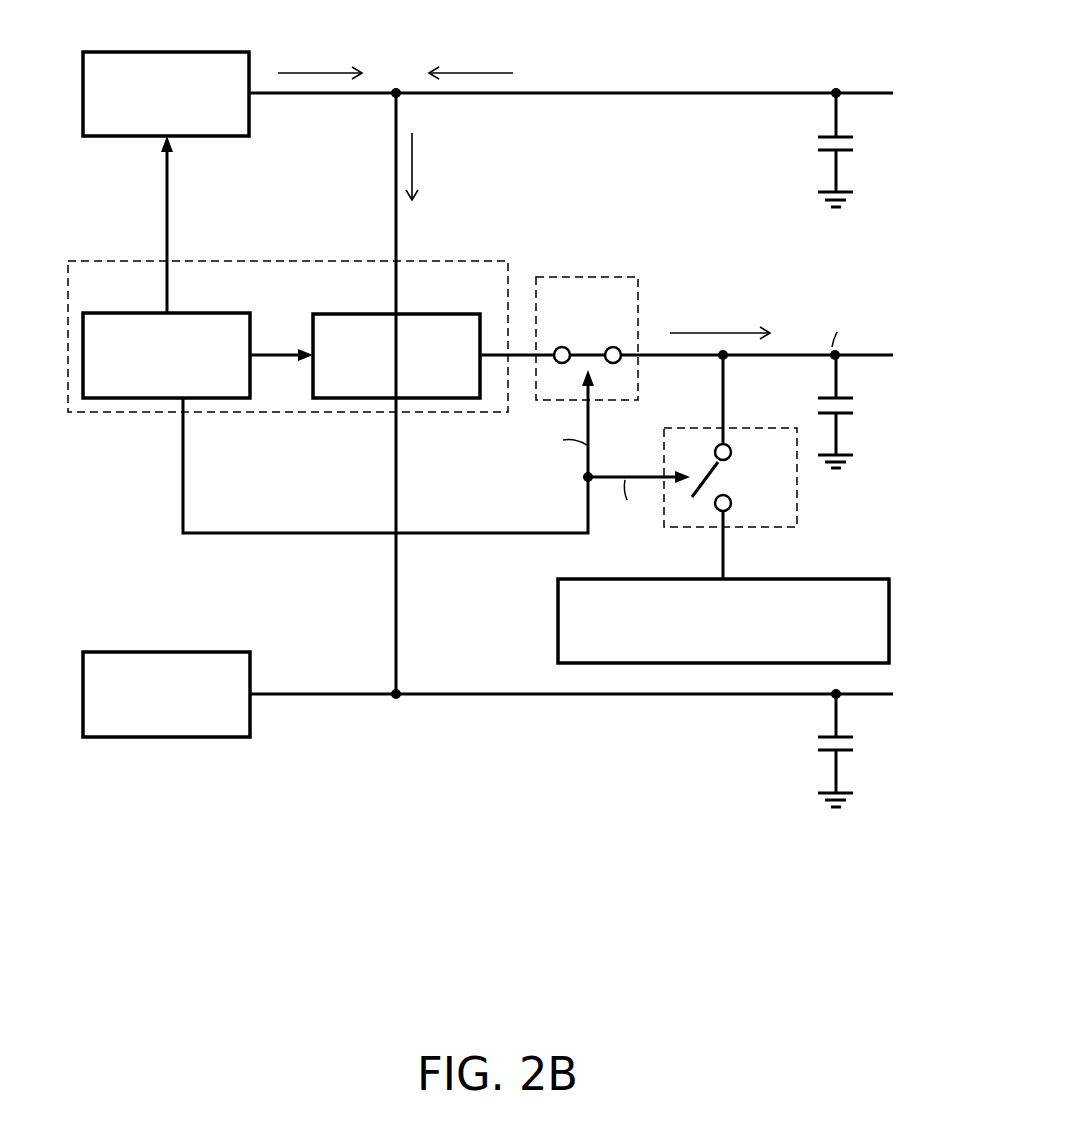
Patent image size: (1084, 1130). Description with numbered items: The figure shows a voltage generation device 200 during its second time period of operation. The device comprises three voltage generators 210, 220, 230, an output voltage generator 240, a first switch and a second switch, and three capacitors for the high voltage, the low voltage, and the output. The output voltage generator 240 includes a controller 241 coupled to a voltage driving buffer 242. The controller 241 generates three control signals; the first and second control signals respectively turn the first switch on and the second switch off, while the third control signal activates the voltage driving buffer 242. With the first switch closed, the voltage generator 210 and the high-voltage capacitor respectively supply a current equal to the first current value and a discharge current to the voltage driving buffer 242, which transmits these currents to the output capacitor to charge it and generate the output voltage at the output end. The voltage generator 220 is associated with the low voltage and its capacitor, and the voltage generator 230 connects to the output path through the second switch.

The voltage generation device 200 is at (925, 950).
The voltage generator 210 is at (209, 52).
The voltage generator 220 is at (209, 652).
The voltage generator 230 is at (848, 579).
The output voltage generator 240 is at (423, 261).
The controller 241 is at (193, 313).
The voltage driving buffer 242 is at (423, 314).